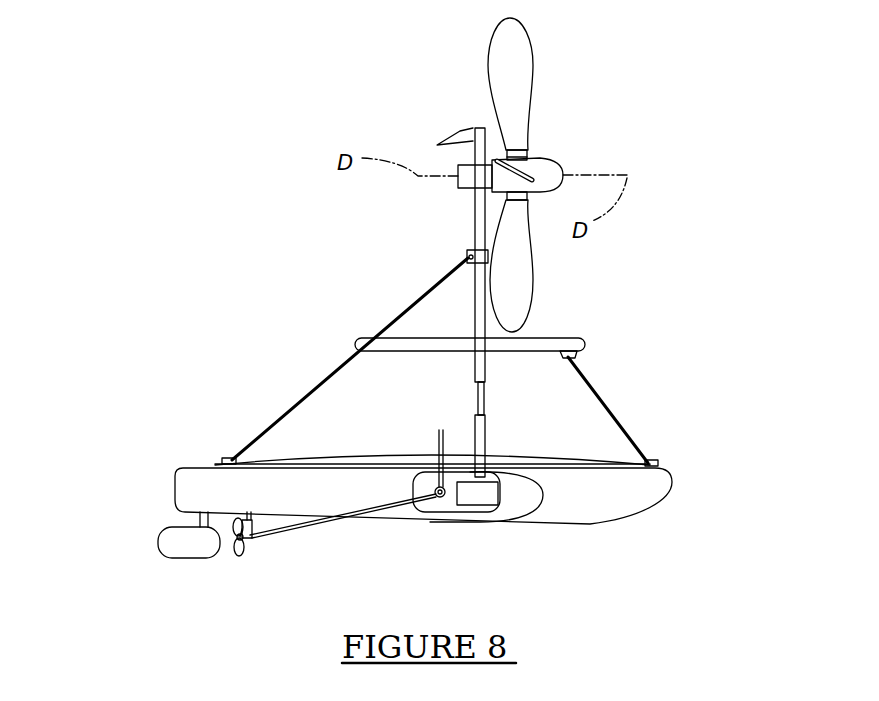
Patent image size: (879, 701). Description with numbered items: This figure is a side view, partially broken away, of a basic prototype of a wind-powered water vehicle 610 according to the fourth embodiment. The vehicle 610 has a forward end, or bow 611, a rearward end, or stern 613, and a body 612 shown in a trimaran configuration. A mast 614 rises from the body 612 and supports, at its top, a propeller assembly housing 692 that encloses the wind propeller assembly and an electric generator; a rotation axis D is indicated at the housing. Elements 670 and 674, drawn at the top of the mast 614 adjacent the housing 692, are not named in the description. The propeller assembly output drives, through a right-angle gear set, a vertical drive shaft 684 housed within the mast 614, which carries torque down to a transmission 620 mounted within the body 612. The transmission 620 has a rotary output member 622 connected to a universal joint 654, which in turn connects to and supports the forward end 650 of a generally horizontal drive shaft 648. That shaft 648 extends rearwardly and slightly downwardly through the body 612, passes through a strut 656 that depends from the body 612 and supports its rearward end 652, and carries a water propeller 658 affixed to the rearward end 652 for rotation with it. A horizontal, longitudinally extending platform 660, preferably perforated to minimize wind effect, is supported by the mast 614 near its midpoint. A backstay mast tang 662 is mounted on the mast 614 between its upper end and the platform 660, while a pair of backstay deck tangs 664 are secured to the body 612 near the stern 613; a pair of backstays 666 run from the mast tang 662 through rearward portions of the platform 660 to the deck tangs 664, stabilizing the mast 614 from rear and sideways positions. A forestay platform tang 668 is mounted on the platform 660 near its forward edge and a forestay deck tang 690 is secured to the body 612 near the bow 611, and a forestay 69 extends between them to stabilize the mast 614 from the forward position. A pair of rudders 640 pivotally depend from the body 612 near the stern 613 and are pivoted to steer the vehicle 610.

The wind-powered water vehicle 610 is at (643, 197).
The bow 611 is at (768, 481).
The body 612 is at (605, 523).
The stern 613 is at (141, 484).
The mast 614 is at (487, 358).
The transmission 620 is at (500, 492).
The rotary output member 622 is at (457, 506).
The rudders 640 is at (160, 545).
The generally horizontal drive shaft 648 is at (270, 530).
The forward end 650 is at (440, 500).
The rearward end 652 is at (243, 548).
The universal joint 654 is at (440, 440).
The strut 656 is at (248, 542).
The water propeller 658 is at (237, 552).
The platform 660 is at (423, 337).
The backstay mast tang 662 is at (466, 252).
The backstay deck tangs 664 is at (228, 458).
The backstays 666 is at (300, 403).
The forestay platform tang 668 is at (567, 360).
The wind vane 670 is at (448, 152).
The nacelle rear housing 674 is at (463, 183).
The vertical drive shaft 684 is at (470, 396).
The forestay deck tang 690 is at (648, 462).
The propeller assembly housing 692 is at (546, 158).
The stay 69 is at (603, 395).